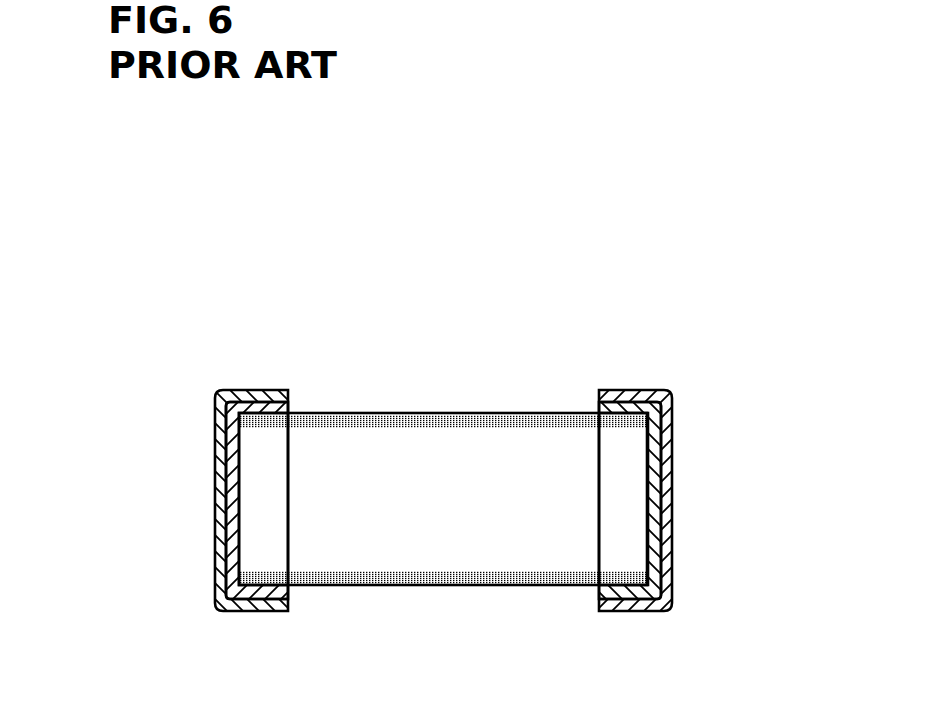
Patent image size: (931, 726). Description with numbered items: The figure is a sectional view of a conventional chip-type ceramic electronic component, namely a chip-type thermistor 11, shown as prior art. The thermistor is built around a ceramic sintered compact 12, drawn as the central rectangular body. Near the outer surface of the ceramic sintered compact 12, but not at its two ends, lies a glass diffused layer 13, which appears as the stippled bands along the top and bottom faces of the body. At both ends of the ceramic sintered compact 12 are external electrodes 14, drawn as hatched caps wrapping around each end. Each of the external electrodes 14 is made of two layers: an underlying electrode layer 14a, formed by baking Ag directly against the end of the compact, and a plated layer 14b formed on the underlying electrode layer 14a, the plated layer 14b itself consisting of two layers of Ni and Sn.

The chip-type thermistor 11 is at (125, 218).
The ceramic sintered compact 12 is at (515, 466).
The glass diffused layer 13 is at (352, 413).
The external electrodes 14 is at (88, 425).
The underlying electrode layer 14a is at (229, 455).
The plated layer 14b is at (221, 538).